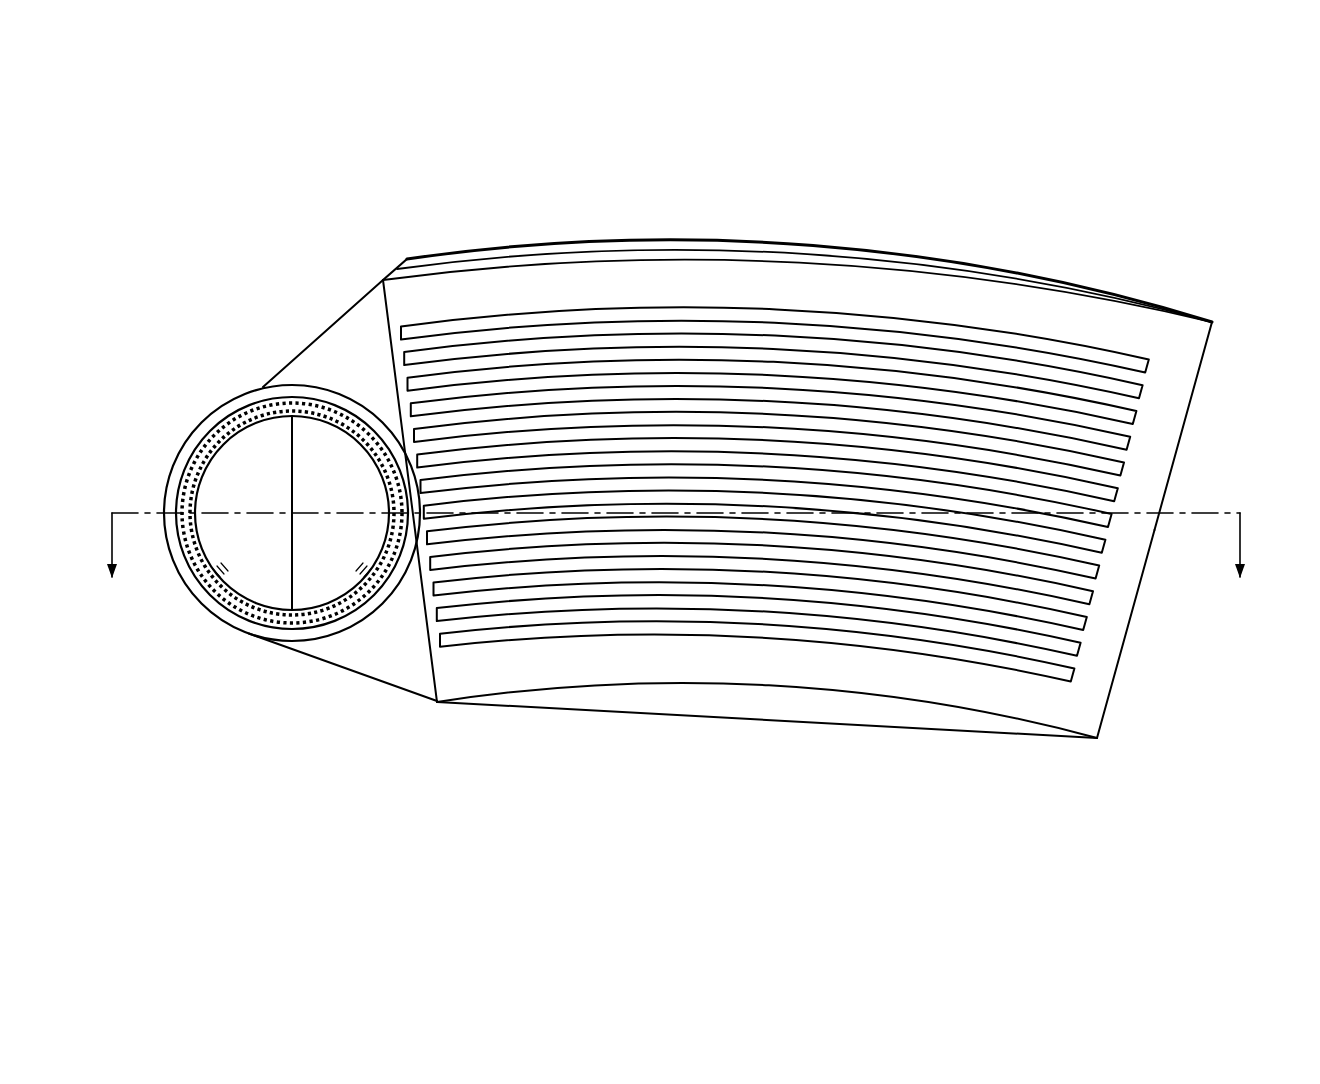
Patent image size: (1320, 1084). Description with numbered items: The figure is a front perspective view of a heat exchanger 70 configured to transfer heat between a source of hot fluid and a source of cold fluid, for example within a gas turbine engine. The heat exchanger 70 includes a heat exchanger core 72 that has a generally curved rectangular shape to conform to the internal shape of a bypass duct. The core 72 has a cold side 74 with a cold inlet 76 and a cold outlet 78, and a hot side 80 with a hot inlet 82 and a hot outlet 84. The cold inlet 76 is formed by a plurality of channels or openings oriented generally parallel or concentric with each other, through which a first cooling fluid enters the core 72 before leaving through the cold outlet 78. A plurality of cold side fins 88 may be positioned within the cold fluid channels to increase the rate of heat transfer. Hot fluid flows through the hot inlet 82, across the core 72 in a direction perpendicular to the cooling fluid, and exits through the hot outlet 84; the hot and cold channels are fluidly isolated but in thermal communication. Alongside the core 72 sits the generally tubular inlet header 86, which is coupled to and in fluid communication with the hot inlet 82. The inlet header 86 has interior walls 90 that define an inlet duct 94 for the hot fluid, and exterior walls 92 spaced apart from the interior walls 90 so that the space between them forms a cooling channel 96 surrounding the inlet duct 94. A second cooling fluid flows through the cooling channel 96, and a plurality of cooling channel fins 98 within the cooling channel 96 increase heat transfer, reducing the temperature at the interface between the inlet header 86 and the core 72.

The heat exchanger 70 is at (282, 168).
The heat exchanger core 72 is at (1073, 257).
The cold side 74 is at (712, 385).
The cold inlet 76 is at (790, 662).
The cold outlet 78 is at (795, 247).
The hot side 80 is at (1183, 440).
The hot inlet 82 is at (395, 367).
The hot outlet 84 is at (1133, 617).
The inlet header 86 is at (252, 373).
The cold side fins 88 is at (541, 322).
The interior walls 90 is at (315, 615).
The exterior walls 92 is at (257, 630).
The inlet duct 94 is at (267, 560).
The cooling channel 96 is at (353, 610).
The cooling channel fins 98 is at (195, 450).